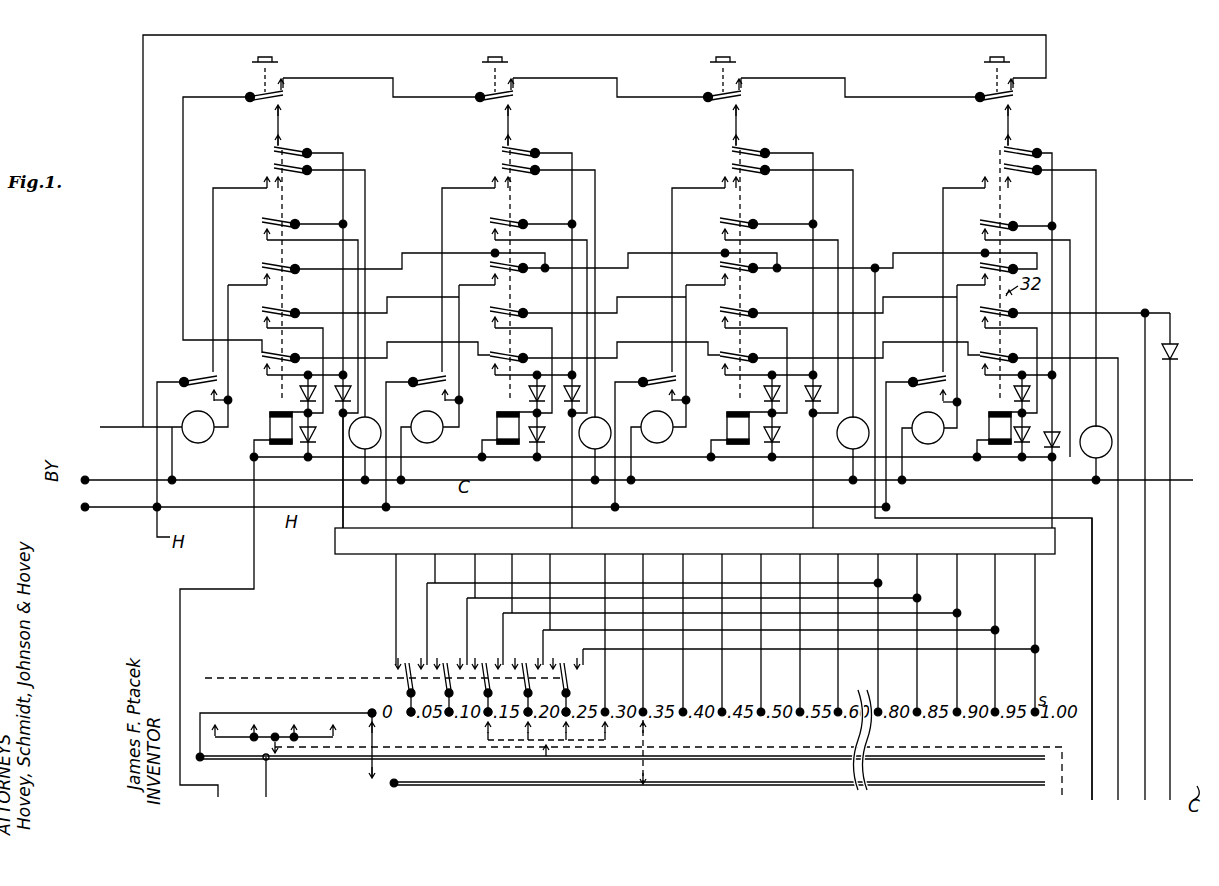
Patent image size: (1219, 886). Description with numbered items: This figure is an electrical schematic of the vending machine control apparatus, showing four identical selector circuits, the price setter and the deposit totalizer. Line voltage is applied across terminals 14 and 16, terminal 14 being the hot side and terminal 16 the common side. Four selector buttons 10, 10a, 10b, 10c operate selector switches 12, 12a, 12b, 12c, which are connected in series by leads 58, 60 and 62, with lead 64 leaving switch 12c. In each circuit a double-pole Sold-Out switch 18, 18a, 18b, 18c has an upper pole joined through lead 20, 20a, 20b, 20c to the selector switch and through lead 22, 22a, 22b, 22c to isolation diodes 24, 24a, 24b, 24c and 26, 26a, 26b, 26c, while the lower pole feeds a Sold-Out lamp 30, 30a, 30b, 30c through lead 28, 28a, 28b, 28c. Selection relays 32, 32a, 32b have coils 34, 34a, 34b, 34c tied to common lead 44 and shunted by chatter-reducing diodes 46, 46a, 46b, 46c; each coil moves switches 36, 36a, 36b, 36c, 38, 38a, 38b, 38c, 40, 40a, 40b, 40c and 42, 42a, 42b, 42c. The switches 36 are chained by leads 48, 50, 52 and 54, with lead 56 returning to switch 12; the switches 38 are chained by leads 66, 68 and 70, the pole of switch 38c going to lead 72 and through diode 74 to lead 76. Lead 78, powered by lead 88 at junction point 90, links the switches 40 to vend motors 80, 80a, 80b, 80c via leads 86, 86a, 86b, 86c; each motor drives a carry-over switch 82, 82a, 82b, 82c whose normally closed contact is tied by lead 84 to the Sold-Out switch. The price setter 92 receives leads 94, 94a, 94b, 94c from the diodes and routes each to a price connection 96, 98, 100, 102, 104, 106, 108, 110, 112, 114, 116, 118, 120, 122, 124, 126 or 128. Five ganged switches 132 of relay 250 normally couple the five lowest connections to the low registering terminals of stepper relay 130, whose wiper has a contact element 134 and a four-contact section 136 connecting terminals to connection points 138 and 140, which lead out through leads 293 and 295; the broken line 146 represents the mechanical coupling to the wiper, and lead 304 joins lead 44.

The selector button 10 is at (269, 58).
The selector button 10a is at (498, 58).
The selector button 10b is at (726, 58).
The selector button 10c is at (984, 58).
The selector switch 12 is at (268, 106).
The selector switch 12a is at (498, 106).
The selector switch 12b is at (726, 106).
The selector switch 12c is at (994, 106).
The terminal 14 is at (84, 508).
The terminal 16 is at (84, 478).
The Sold-Out switch 18 is at (286, 144).
The Sold-Out switch 18a is at (528, 144).
The Sold-Out switch 18b is at (756, 144).
The Sold-Out switch 18c is at (1031, 144).
The lead 20 is at (264, 140).
The lead 20a is at (517, 116).
The lead 20b is at (745, 116).
The lead 20c is at (1014, 116).
The lead 22 is at (343, 195).
The lead 22a is at (574, 156).
The lead 22b is at (820, 186).
The lead 22c is at (1054, 186).
The isolation diode 24 is at (292, 394).
The isolation diode 24a is at (537, 416).
The isolation diode 24b is at (758, 390).
The isolation diode 24c is at (1022, 416).
The isolation diode 26 is at (350, 396).
The isolation diode 26a is at (582, 396).
The isolation diode 26b is at (804, 406).
The isolation diode 26c is at (1040, 448).
The lead 28 is at (364, 206).
The lead 28a is at (596, 186).
The lead 28b is at (854, 170).
The lead 28c is at (1097, 194).
The Sold-Out lamp 30 is at (350, 434).
The Sold-Out lamp 30a is at (580, 450).
The Sold-Out lamp 30b is at (844, 446).
The Sold-Out lamp 30c is at (1090, 454).
The selection relay 32 is at (295, 298).
The selection relay 32a is at (522, 300).
The selection relay 32b is at (760, 300).
The relay coil 34 is at (270, 428).
The relay coil 34a is at (492, 418).
The relay coil 34b is at (727, 418).
The relay coil 34c is at (982, 434).
The relay switch 36 is at (285, 355).
The relay switch 36a is at (510, 355).
The relay switch 36b is at (742, 355).
The relay switch 36c is at (993, 357).
The relay switch 38 is at (264, 306).
The relay switch 38a is at (494, 322).
The relay switch 38b is at (722, 322).
The relay switch 38c is at (976, 312).
The relay switch 40 is at (264, 262).
The relay switch 40a is at (488, 272).
The relay switch 40b is at (724, 272).
The relay switch 40c is at (988, 272).
The relay switch 42 is at (264, 216).
The relay switch 42a is at (504, 220).
The relay switch 42b is at (732, 218).
The relay switch 42c is at (984, 220).
The lead 44 is at (428, 456).
The diode 46 is at (300, 452).
The diode 46a is at (537, 444).
The diode 46b is at (772, 444).
The diode 46c is at (1022, 444).
The lead 48 is at (392, 338).
The lead 50 is at (622, 348).
The lead 52 is at (887, 344).
The lead 54 is at (1074, 592).
The lead 56 is at (182, 280).
The lead 58 is at (354, 72).
The lead 60 is at (586, 72).
The lead 62 is at (838, 72).
The lead 64 is at (1046, 52).
The lead 66 is at (384, 304).
The lead 68 is at (622, 304).
The lead 70 is at (879, 300).
The lead 72 is at (1145, 330).
The diode 74 is at (1178, 358).
The lead 76 is at (1174, 569).
The lead 78 is at (666, 252).
The vend motor 80 is at (190, 450).
The vend motor 80a is at (416, 424).
The vend motor 80b is at (640, 422).
The vend motor 80c is at (914, 420).
The carry-over switch 82 is at (202, 376).
The carry-over switch 82a is at (432, 378).
The carry-over switch 82b is at (670, 376).
The carry-over switch 82c is at (938, 376).
The lead 84 is at (214, 188).
The lead 86 is at (242, 368).
The lead 86a is at (476, 368).
The lead 86b is at (702, 368).
The lead 86c is at (950, 398).
The lead 88 is at (1090, 798).
The junction point 90 is at (875, 260).
The price setter 92 is at (695, 483).
The lead 94 is at (342, 516).
The lead 94a is at (572, 512).
The lead 94b is at (813, 512).
The lead 94c is at (1054, 496).
The price connection 96 is at (394, 575).
The price connection 98 is at (434, 575).
The price connection 100 is at (469, 563).
The price connection 102 is at (509, 563).
The price connection 104 is at (547, 563).
The price connection 106 is at (599, 563).
The price connection 108 is at (626, 633).
The price connection 110 is at (666, 633).
The price connection 112 is at (706, 633).
The price connection 114 is at (744, 633).
The price connection 116 is at (784, 633).
The price connection 118 is at (822, 633).
The price connection 120 is at (862, 633).
The price connection 122 is at (901, 633).
The price connection 124 is at (941, 633).
The price connection 126 is at (979, 633).
The price connection 128 is at (1019, 633).
The stepper relay 130 is at (350, 706).
The single-pole double-throw switches 132 is at (400, 668).
The contact element 134 is at (372, 766).
The contact section 136 is at (230, 724).
The electrical connection point 138 is at (544, 792).
The electrical connection point 140 is at (474, 762).
The mechanical coupling 146 is at (744, 752).
The relay 250 is at (225, 674).
The lead 293 is at (410, 792).
The lead 295 is at (284, 791).
The lead 304 is at (236, 791).